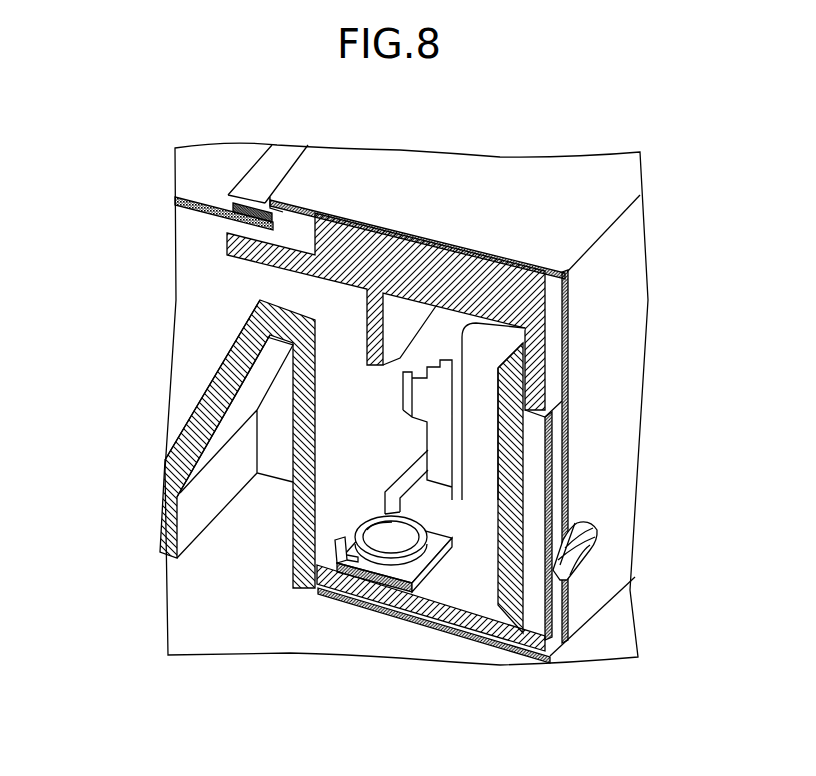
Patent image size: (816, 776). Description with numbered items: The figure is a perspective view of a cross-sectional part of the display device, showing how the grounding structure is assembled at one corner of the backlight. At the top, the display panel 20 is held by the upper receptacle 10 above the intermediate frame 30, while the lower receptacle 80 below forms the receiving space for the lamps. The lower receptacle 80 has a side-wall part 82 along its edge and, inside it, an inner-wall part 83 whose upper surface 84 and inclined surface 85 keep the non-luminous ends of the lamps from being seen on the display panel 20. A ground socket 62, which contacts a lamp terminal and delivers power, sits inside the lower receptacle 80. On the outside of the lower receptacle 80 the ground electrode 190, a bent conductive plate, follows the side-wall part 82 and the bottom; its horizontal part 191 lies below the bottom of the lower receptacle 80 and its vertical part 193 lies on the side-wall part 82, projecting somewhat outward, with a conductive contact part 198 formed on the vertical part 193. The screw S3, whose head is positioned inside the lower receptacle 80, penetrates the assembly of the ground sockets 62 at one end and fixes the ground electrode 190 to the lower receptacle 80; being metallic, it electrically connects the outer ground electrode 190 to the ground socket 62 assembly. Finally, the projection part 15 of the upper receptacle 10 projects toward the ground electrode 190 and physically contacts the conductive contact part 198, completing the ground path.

The upper receptacle 10 is at (617, 308).
The projection part 15 is at (583, 547).
The display panel 20 is at (208, 180).
The intermediate frame 30 is at (415, 262).
The ground socket 62 is at (362, 568).
The screw S3 is at (396, 535).
The lower receptacle 80 is at (282, 439).
The side-wall part 82 is at (497, 430).
The inner-wall part 83 is at (185, 424).
The upper surface 84 is at (238, 330).
The inclined surface 85 is at (242, 363).
The ground electrode 190 is at (462, 512).
The horizontal part 191 is at (490, 615).
The vertical part 193 is at (540, 582).
The conductive contact part 198 is at (575, 578).